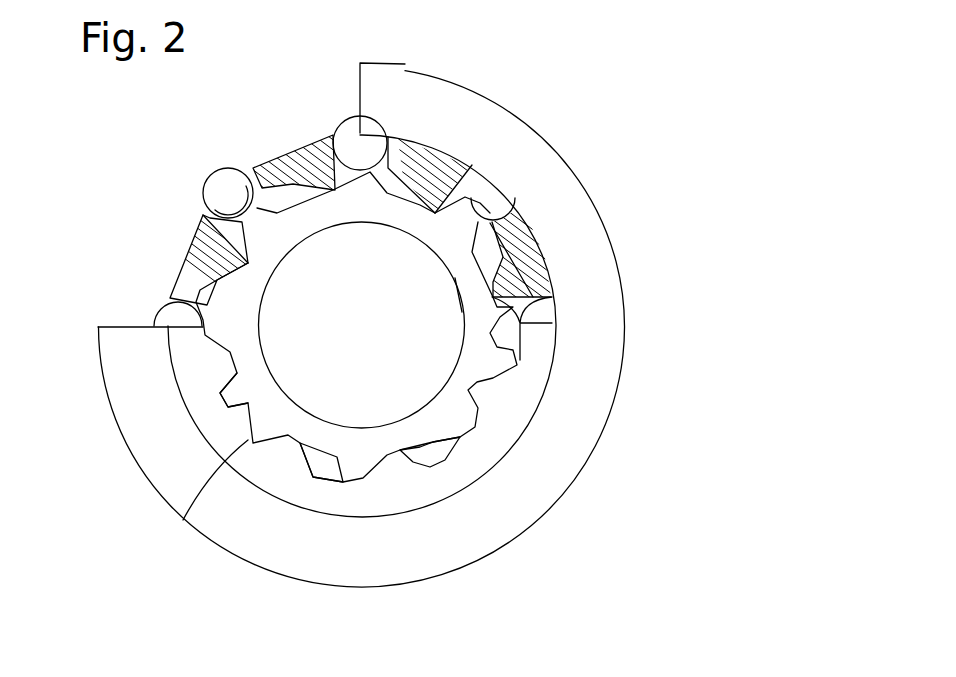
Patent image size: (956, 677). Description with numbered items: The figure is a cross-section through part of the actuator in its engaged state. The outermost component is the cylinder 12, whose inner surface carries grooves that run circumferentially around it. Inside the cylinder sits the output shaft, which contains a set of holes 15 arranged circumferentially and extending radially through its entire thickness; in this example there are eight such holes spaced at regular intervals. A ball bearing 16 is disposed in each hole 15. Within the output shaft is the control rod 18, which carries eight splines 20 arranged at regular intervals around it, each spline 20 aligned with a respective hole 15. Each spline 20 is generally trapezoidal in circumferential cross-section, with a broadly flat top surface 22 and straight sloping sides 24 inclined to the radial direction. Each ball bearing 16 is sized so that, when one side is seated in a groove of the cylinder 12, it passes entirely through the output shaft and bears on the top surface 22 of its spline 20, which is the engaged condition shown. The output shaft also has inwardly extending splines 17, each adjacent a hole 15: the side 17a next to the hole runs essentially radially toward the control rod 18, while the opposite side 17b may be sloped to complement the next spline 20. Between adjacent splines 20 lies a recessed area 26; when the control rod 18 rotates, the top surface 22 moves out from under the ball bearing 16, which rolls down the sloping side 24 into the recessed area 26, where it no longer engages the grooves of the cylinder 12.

The cylinder 12 is at (597, 260).
The holes 15 is at (328, 172).
The ball bearing 16 is at (212, 192).
The inwardly extending splines 17 is at (220, 264).
The side of spline adjacent hole 17a is at (477, 173).
The opposite side of spline 17b is at (409, 66).
The control rod 18 is at (478, 363).
The spline 20 is at (360, 477).
The top surface 22 is at (183, 520).
The sloping sides 24 is at (247, 412).
The recessed area 26 is at (437, 443).